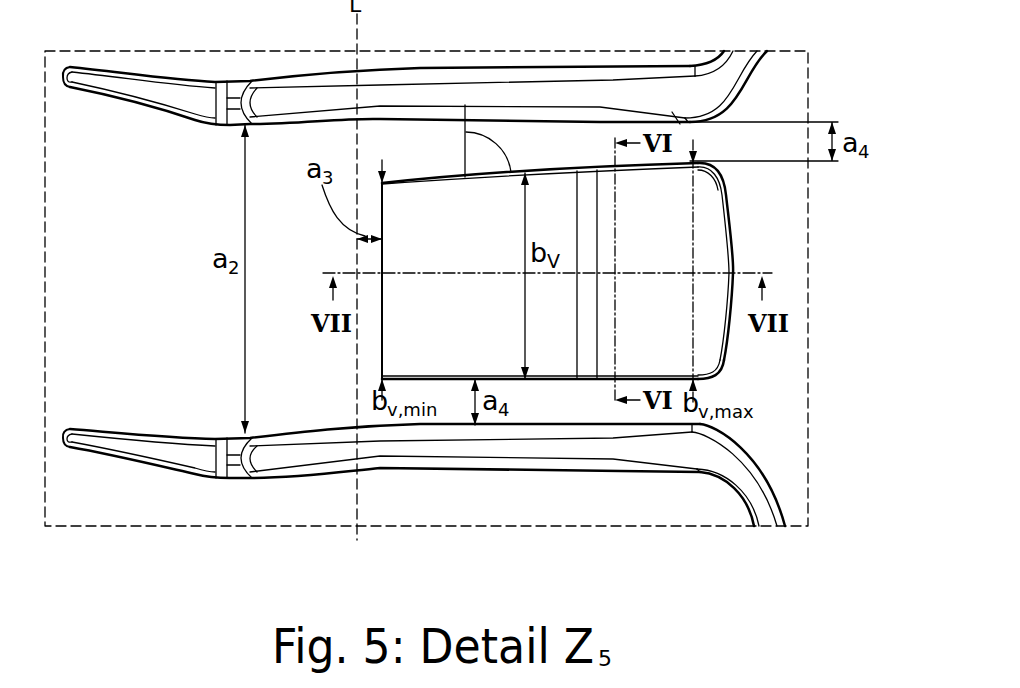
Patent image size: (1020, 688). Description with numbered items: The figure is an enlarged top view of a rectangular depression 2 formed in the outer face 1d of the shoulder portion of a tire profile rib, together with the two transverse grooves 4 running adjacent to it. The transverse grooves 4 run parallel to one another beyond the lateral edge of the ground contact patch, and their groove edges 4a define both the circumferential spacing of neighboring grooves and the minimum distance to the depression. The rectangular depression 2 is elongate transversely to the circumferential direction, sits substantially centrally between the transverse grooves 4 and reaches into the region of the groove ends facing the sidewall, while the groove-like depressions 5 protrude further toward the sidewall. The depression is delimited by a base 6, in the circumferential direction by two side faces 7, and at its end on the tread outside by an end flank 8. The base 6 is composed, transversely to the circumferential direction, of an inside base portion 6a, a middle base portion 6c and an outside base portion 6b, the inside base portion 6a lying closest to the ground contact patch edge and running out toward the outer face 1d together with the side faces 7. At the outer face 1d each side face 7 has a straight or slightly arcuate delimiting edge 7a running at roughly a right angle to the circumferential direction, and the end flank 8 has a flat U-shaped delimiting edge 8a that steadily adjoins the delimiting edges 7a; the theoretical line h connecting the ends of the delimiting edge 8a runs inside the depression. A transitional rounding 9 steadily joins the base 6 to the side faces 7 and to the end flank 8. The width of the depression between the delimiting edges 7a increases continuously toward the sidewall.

The outer face 1d is at (397, 510).
The rectangular depression 2 is at (632, 203).
The transverse grooves 4 is at (548, 92).
The groove edges 4a is at (428, 108).
The groove-like depressions 5 is at (740, 72).
The base 6 is at (540, 309).
The inside base portion 6a is at (453, 357).
The outside base portion 6b is at (680, 357).
The middle base portion 6c is at (588, 357).
The side faces 7 is at (548, 155).
The delimiting edge 7a is at (513, 170).
The end flank 8 is at (740, 252).
The delimiting edge 8a is at (735, 335).
The transitional rounding 9 is at (676, 118).
The theoretical line h is at (693, 180).